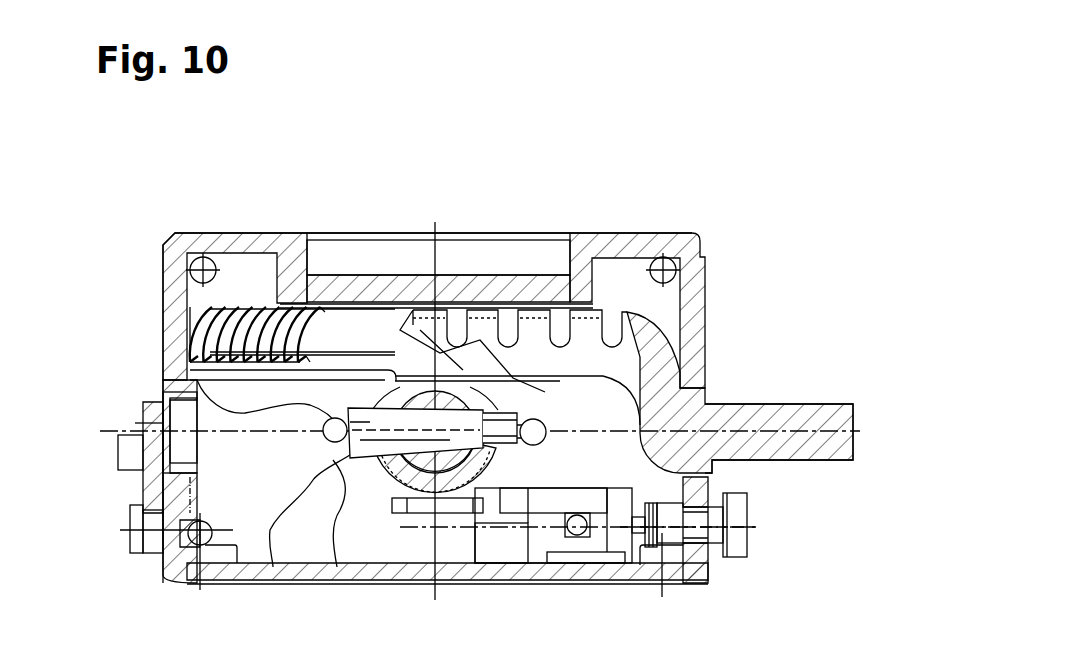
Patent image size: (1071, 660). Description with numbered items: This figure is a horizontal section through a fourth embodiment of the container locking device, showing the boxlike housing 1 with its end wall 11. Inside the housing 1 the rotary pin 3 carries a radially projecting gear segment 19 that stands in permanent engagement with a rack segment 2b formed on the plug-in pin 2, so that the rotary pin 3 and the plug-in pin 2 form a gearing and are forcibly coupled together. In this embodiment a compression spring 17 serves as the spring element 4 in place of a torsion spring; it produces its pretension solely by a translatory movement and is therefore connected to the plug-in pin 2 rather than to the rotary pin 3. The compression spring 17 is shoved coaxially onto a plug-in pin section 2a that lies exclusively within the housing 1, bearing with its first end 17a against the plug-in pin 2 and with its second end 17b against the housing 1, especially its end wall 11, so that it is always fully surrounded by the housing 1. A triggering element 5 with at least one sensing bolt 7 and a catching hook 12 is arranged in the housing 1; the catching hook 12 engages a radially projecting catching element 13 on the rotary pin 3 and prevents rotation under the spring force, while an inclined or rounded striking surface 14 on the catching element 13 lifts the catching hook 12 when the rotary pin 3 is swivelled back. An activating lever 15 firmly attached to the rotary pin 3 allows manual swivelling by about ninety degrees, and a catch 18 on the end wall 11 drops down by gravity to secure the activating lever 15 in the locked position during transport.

The housing 1 is at (172, 196).
The plug-in pin 2 is at (817, 403).
The plug-in pin section 2a is at (705, 303).
The rack segment 2b is at (530, 236).
The rotary pin 3 is at (320, 530).
The spring element 4 is at (293, 345).
The triggering element 5 is at (500, 537).
The sensing bolt 7 is at (707, 540).
The end wall 11 is at (653, 342).
The catching hook 12 is at (420, 507).
The catching element 13 is at (200, 378).
The striking surface 14 is at (300, 480).
The activating lever 15 is at (127, 453).
The compression spring 17 is at (233, 234).
The first end 17a is at (346, 234).
The second end 17b is at (200, 333).
The catch 18 is at (133, 492).
The gear segment 19 is at (405, 234).